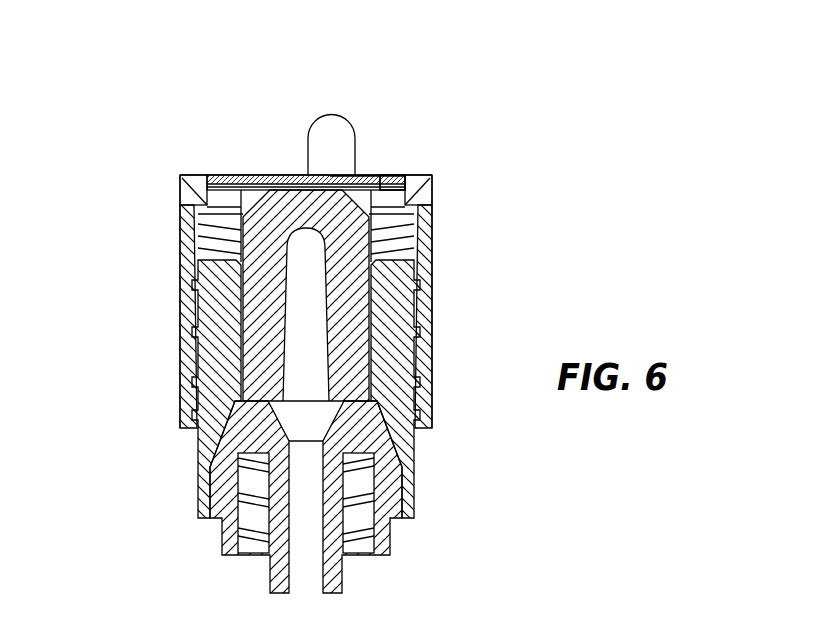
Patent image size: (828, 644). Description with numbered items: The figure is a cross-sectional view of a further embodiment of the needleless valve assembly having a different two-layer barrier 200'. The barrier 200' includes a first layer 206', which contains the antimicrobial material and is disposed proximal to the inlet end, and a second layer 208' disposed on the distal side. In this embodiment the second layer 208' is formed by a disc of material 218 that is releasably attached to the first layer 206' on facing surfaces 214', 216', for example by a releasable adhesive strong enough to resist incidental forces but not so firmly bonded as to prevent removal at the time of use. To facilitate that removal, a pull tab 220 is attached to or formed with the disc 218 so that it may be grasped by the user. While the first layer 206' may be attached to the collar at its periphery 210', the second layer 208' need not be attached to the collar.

The barrier 200' is at (282, 301).
The first layer 206' is at (286, 136).
The second layer 208' is at (306, 151).
The periphery 210' is at (253, 289).
The facing surface 214' is at (412, 153).
The facing surface 216' is at (435, 153).
The disc of material 218 is at (362, 180).
The pull tab 220 is at (330, 137).